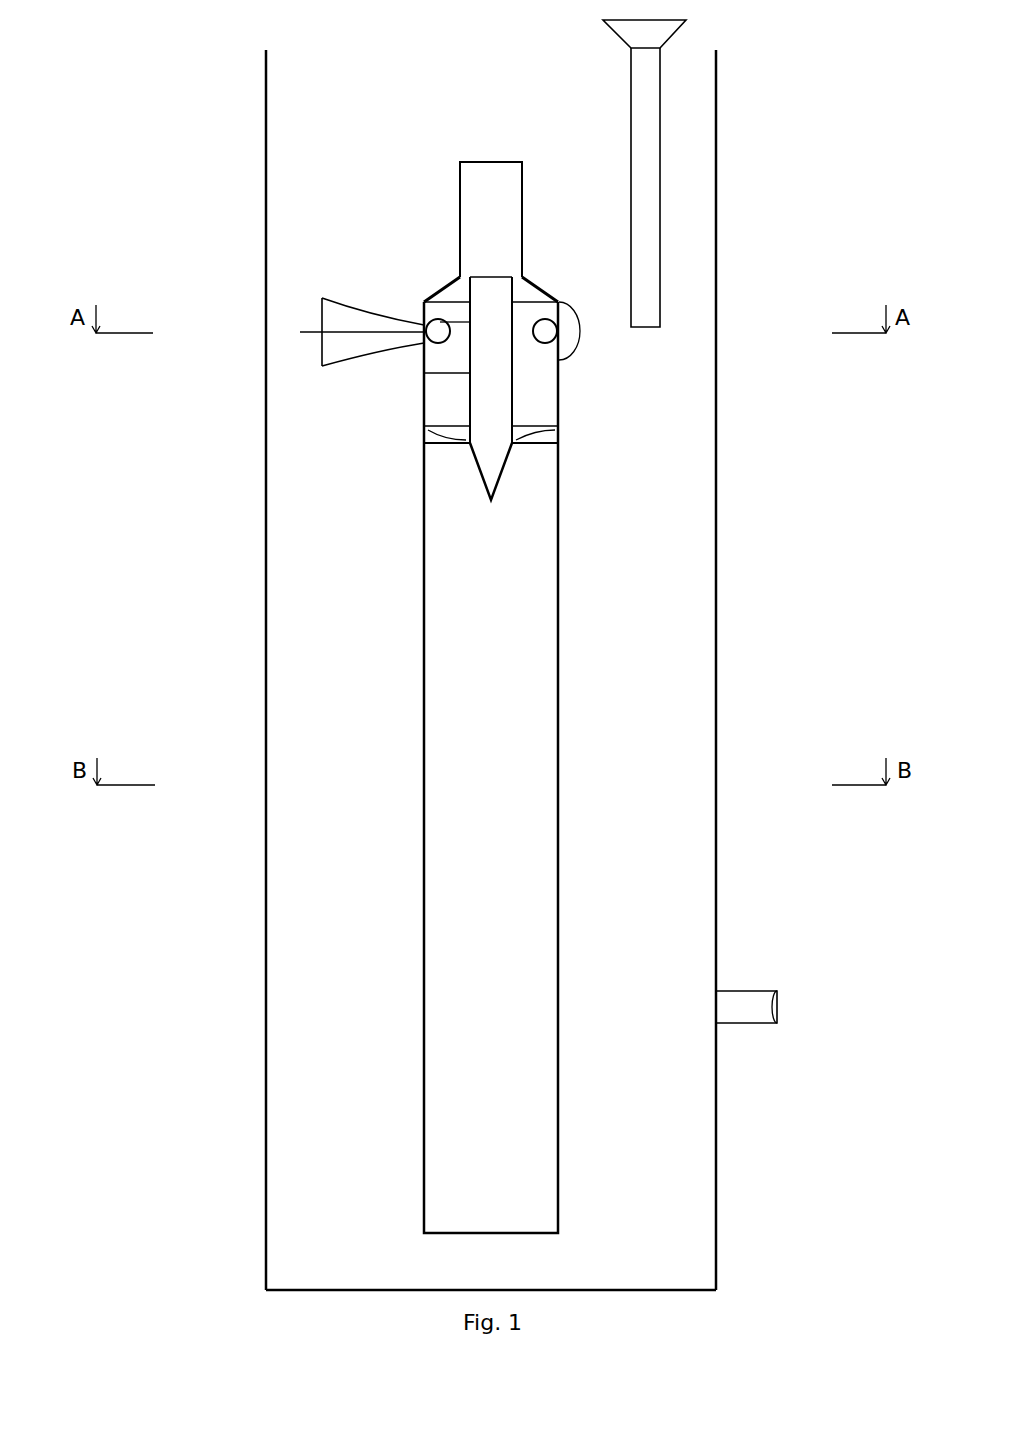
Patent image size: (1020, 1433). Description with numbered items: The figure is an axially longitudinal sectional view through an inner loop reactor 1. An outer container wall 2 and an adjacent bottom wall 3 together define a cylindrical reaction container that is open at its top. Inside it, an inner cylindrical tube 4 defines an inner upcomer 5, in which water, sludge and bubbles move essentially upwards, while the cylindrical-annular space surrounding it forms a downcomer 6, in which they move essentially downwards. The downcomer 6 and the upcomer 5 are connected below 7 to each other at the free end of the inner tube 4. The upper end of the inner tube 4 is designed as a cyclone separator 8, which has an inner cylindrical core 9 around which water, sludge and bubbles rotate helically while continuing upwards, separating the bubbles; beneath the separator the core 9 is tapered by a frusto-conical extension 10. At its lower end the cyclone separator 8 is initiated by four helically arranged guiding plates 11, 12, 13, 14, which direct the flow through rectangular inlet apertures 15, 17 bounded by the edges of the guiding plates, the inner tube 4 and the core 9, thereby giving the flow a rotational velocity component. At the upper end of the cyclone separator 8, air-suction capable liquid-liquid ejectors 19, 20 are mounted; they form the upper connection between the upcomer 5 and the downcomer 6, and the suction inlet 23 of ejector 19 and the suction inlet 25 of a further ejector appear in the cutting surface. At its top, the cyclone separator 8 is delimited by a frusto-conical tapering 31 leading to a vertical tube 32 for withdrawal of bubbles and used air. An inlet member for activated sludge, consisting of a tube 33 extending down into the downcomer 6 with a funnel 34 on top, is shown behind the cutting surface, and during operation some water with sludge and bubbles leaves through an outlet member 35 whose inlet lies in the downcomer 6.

The inner loop reactor 1 is at (247, 638).
The outer container wall 2 is at (265, 693).
The bottom wall 3 is at (360, 1292).
The inner cylindrical tube 4 is at (424, 1057).
The inner upcomer 5 is at (490, 1097).
The downcomer 6 is at (370, 1140).
The lower connection 7 is at (425, 1258).
The cyclone separator 8 is at (424, 405).
The inner cylindrical core 9 is at (470, 375).
The frusto-conical extension 10 is at (475, 475).
The guiding plate 11 is at (556, 440).
The guiding plate 12 is at (432, 433).
The guiding plate 13 is at (440, 448).
The guiding plate 14 is at (516, 431).
The inlet aperture 15 is at (560, 433).
The inlet aperture 17 is at (440, 441).
The liquid-liquid ejector 19 is at (572, 332).
The liquid-liquid ejector 20 is at (423, 302).
The suction inlet 23 is at (545, 341).
The suction inlet 25 is at (300, 332).
The frusto-conical tapering 31 is at (450, 320).
The vertical tube 32 is at (458, 187).
The tube 33 is at (648, 93).
The funnel 34 is at (668, 32).
The outlet member 35 is at (745, 990).